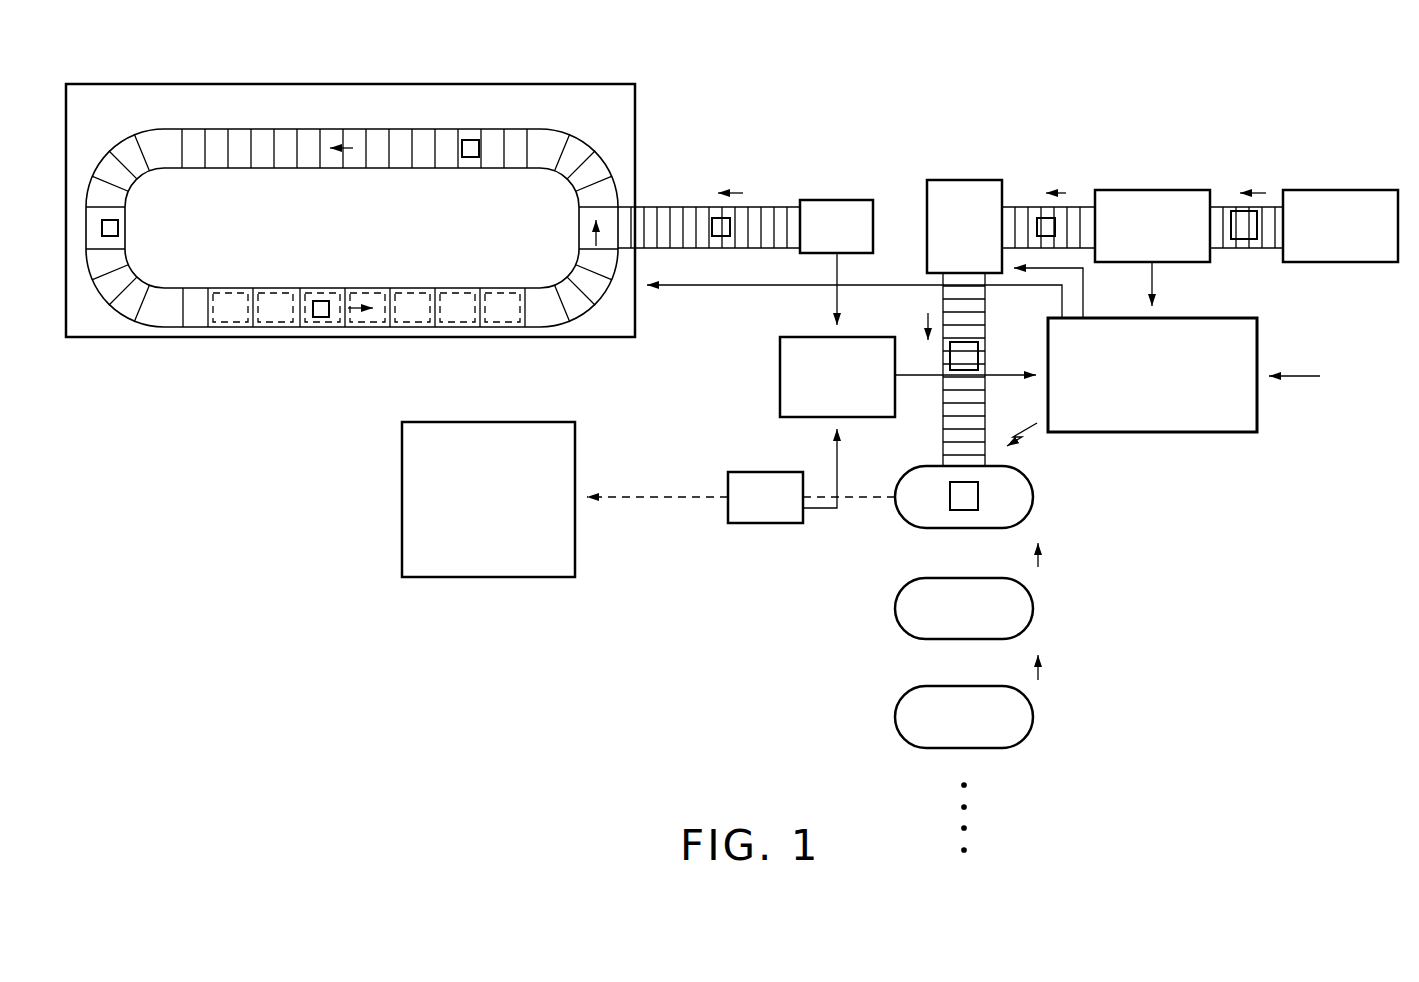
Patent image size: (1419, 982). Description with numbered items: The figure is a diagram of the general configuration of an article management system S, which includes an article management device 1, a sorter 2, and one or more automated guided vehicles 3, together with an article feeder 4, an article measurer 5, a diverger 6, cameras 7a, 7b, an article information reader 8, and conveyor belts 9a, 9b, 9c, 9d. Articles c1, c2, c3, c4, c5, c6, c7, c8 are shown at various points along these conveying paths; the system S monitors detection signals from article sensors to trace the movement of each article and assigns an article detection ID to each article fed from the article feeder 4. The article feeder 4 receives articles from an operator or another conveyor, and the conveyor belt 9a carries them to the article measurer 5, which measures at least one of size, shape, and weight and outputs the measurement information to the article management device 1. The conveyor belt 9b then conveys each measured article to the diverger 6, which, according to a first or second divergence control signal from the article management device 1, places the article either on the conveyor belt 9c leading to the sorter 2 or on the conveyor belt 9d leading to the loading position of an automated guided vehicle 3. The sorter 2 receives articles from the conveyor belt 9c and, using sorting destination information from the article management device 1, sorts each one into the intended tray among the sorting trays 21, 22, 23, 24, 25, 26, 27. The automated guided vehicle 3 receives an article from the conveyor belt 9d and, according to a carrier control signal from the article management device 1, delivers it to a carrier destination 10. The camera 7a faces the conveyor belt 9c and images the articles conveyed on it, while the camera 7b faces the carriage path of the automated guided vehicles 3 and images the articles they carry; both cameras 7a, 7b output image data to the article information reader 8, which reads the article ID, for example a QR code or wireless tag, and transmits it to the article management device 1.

The article management system S is at (1215, 82).
The article management device 1 is at (1197, 433).
The sorter 2 is at (548, 84).
The automated guided vehicle (AGV) 3 is at (1033, 497).
The article feeder 4 is at (1360, 190).
The article measurer 5 is at (1175, 190).
The diverger 6 is at (970, 180).
The camera 7a is at (838, 200).
The camera 7b is at (766, 524).
The article information reader 8 is at (862, 418).
The conveyor belt 9a is at (1266, 207).
The conveyor belt 9b is at (1072, 207).
The conveyor belt 9c is at (779, 207).
The conveyor belt 9d is at (985, 300).
The carrier destination 10 is at (575, 440).
The sorting tray 21 is at (505, 331).
The sorting tray 22 is at (460, 331).
The sorting tray 23 is at (415, 331).
The sorting tray 24 is at (370, 331).
The sorting tray 25 is at (325, 331).
The sorting tray 26 is at (279, 331).
The sorting tray 27 is at (233, 331).
The article c1 is at (321, 301).
The article c2 is at (118, 227).
The article c3 is at (470, 140).
The article c4 is at (713, 218).
The article c5 is at (965, 511).
The article c6 is at (978, 354).
The article c7 is at (1044, 218).
The article c8 is at (1244, 239).